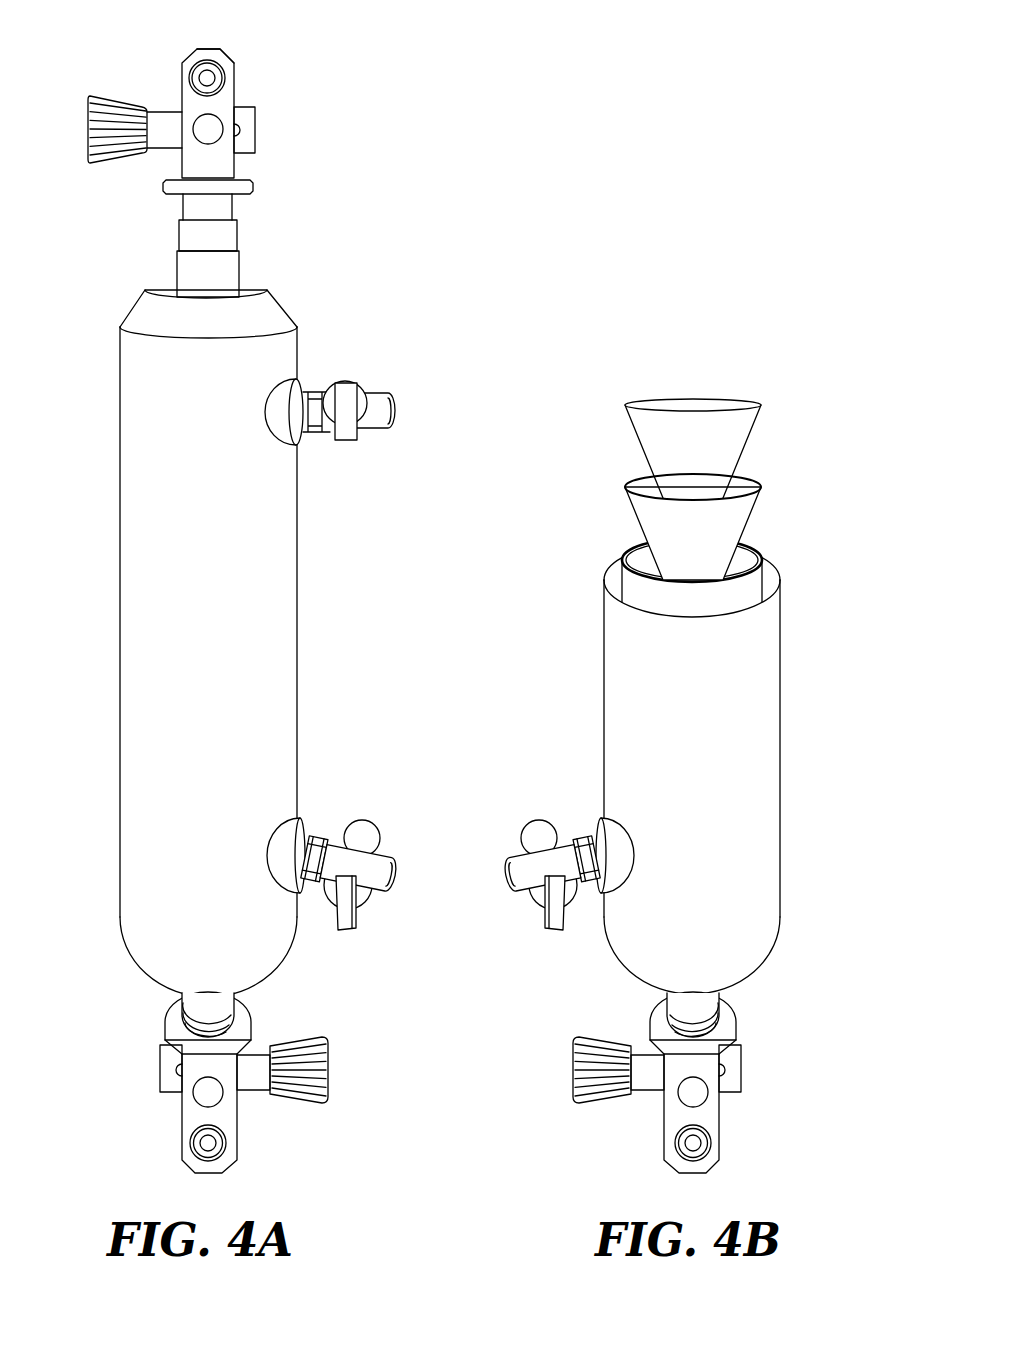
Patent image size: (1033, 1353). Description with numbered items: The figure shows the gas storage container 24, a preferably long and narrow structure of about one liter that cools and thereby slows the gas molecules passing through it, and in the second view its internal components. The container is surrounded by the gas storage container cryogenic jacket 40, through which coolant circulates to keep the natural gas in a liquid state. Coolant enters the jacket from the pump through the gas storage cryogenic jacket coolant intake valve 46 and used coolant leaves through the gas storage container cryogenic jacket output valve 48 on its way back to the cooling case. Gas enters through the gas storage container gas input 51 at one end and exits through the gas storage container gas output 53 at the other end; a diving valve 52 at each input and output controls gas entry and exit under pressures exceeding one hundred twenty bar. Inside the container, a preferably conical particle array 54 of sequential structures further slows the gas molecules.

In FIG. 4B, the gas storage container 24 is at (622, 547).
In FIG. 4A, the gas storage container cryogenic jacket 40 is at (152, 557).
In FIG. 4B, the gas storage container cryogenic jacket 40 is at (748, 748).
In FIG. 4A, the gas storage cryogenic jacket coolant intake valve 46 is at (375, 826).
In FIG. 4B, the gas storage cryogenic jacket coolant intake valve 46 is at (540, 826).
In FIG. 4A, the gas storage container cryogenic jacket output valve 48 is at (398, 410).
In FIG. 4A, the gas storage container gas input 51 is at (256, 132).
In FIG. 4A, the diving valve 52 is at (228, 52).
In FIG. 4B, the diving valve 52 is at (666, 1153).
In FIG. 4B, the gas storage container gas output 53 is at (741, 1070).
In FIG. 4B, the particle array 54 is at (722, 520).